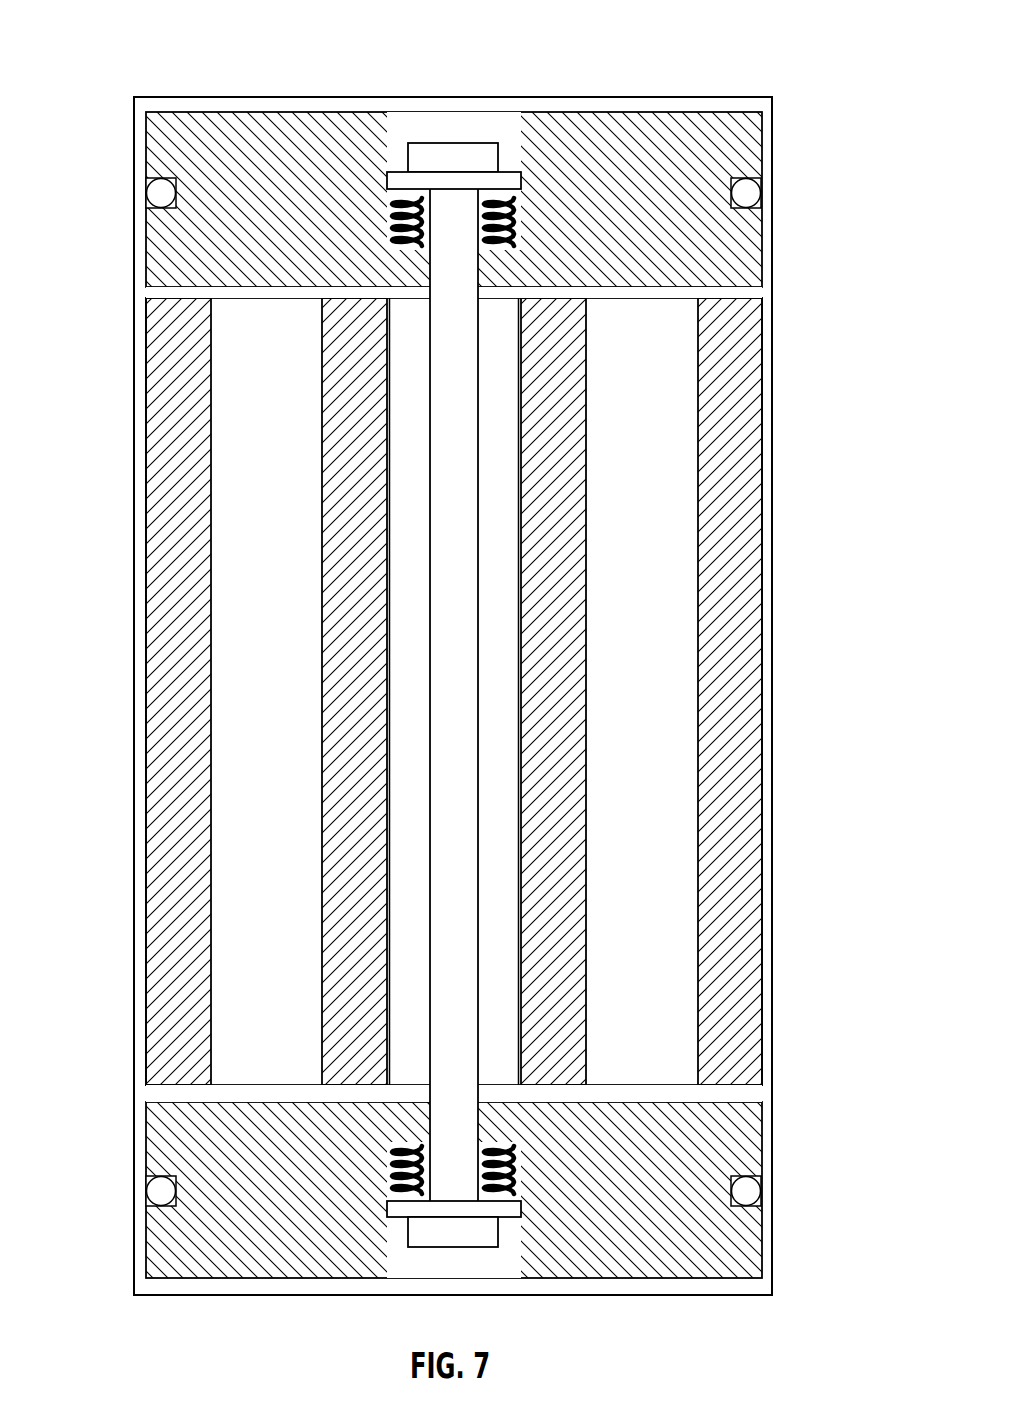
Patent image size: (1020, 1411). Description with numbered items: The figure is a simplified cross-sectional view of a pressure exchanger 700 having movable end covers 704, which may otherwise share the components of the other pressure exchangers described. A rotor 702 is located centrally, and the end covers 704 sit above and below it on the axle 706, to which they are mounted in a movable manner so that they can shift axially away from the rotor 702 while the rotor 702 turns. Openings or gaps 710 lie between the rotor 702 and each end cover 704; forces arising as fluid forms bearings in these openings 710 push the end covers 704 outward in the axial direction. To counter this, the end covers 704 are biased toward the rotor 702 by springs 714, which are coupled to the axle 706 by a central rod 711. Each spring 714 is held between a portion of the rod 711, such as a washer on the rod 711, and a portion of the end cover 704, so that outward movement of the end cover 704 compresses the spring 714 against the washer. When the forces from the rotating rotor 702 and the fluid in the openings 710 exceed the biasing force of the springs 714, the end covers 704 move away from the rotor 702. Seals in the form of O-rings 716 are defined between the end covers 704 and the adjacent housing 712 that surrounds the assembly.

The pressure exchanger 700 is at (786, 60).
The rotor 702 is at (737, 385).
The end cover 704 is at (710, 175).
The axle 706 is at (503, 367).
The opening 710 is at (240, 292).
The central rod 711 is at (447, 623).
The housing 712 is at (773, 545).
The spring 714 is at (395, 235).
The O-ring 716 is at (745, 195).